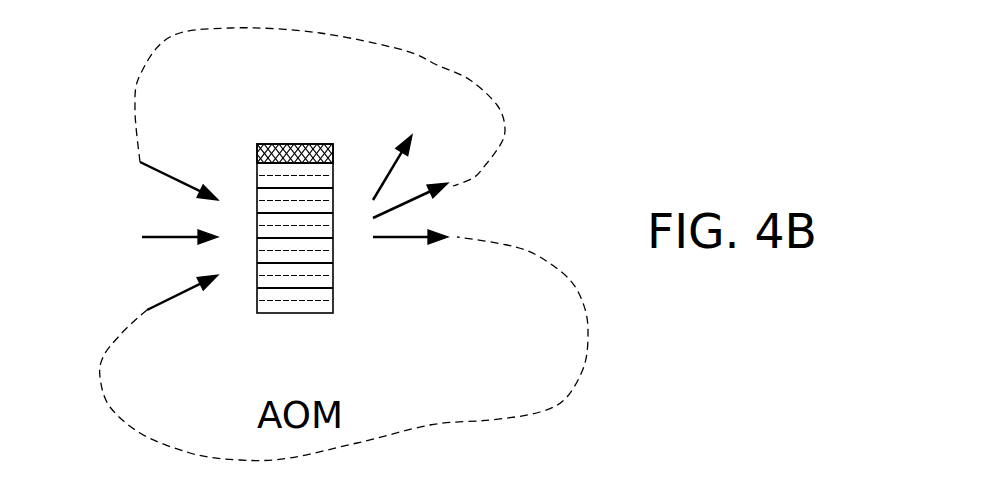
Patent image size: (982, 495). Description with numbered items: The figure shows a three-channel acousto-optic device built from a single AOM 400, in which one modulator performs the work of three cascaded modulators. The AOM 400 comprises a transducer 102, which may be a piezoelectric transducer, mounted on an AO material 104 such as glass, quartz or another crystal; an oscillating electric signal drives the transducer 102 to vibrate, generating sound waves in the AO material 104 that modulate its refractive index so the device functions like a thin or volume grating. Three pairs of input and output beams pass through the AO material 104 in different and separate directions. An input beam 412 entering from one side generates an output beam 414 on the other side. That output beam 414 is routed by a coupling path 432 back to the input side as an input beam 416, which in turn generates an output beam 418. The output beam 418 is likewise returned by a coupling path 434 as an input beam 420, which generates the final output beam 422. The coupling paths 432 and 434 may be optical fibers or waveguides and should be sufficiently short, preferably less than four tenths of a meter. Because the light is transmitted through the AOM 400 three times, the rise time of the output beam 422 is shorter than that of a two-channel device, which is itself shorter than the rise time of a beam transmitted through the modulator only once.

The AOM 400 is at (293, 313).
The transducer 102 is at (297, 144).
The AO material 104 is at (334, 300).
The input beam 412 is at (172, 235).
The input beam 416 is at (162, 172).
The input beam 420 is at (163, 303).
The output beam 414 is at (412, 202).
The output beam 418 is at (393, 240).
The output beam 422 is at (395, 167).
The coupling path 432 is at (432, 62).
The coupling path 434 is at (430, 425).